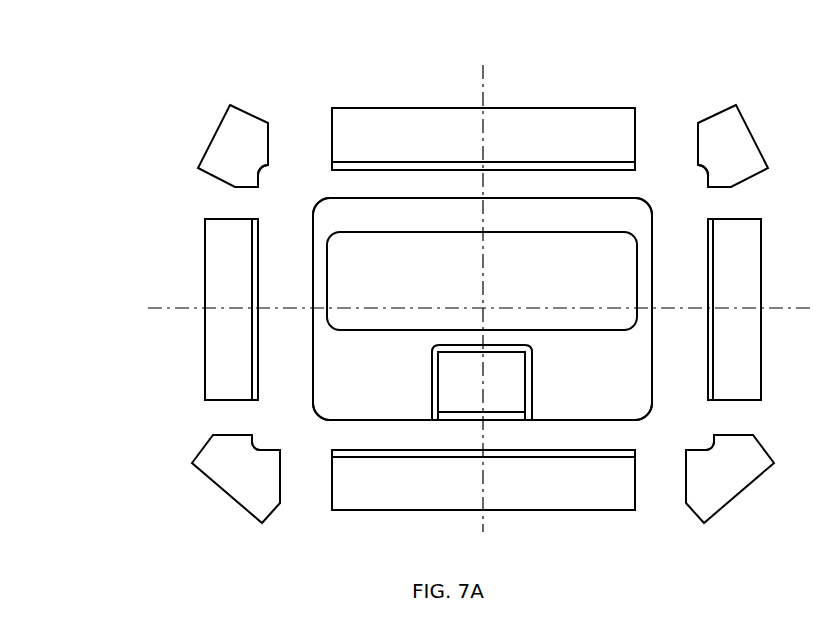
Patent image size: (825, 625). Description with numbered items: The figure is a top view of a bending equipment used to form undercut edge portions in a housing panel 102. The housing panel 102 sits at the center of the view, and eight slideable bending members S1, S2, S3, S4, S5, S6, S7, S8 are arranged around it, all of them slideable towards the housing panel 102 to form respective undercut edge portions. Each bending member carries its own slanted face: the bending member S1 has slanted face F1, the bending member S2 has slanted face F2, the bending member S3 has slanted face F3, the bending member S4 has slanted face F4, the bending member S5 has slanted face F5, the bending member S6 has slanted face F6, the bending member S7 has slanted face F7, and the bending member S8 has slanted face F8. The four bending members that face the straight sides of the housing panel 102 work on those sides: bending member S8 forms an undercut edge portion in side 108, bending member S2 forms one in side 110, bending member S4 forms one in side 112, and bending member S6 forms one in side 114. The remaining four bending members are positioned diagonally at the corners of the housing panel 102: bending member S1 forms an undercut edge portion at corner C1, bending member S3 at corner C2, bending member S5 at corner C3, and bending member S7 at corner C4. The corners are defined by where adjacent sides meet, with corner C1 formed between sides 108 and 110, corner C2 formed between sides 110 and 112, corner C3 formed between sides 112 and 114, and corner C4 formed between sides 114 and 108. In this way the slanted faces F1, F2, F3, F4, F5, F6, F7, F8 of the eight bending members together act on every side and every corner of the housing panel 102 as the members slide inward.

The housing panel 102 is at (637, 198).
The side 108 is at (313, 248).
The side 110 is at (498, 198).
The side 112 is at (653, 260).
The side 114 is at (405, 410).
The corner C1 is at (318, 201).
The corner C2 is at (653, 213).
The corner C3 is at (652, 413).
The corner C4 is at (317, 418).
The slideable bending member S1 is at (230, 135).
The slideable bending member S2 is at (558, 118).
The slideable bending member S3 is at (737, 135).
The slideable bending member S4 is at (745, 258).
The slideable bending member S5 is at (733, 482).
The slideable bending member S6 is at (577, 495).
The slideable bending member S7 is at (235, 490).
The slideable bending member S8 is at (220, 260).
The slanted face F1 is at (262, 176).
The slanted face F2 is at (380, 171).
The slanted face F3 is at (702, 172).
The slanted face F4 is at (708, 363).
The slanted face F5 is at (703, 447).
The slanted face F6 is at (560, 447).
The slanted face F7 is at (263, 447).
The slanted face F8 is at (260, 355).